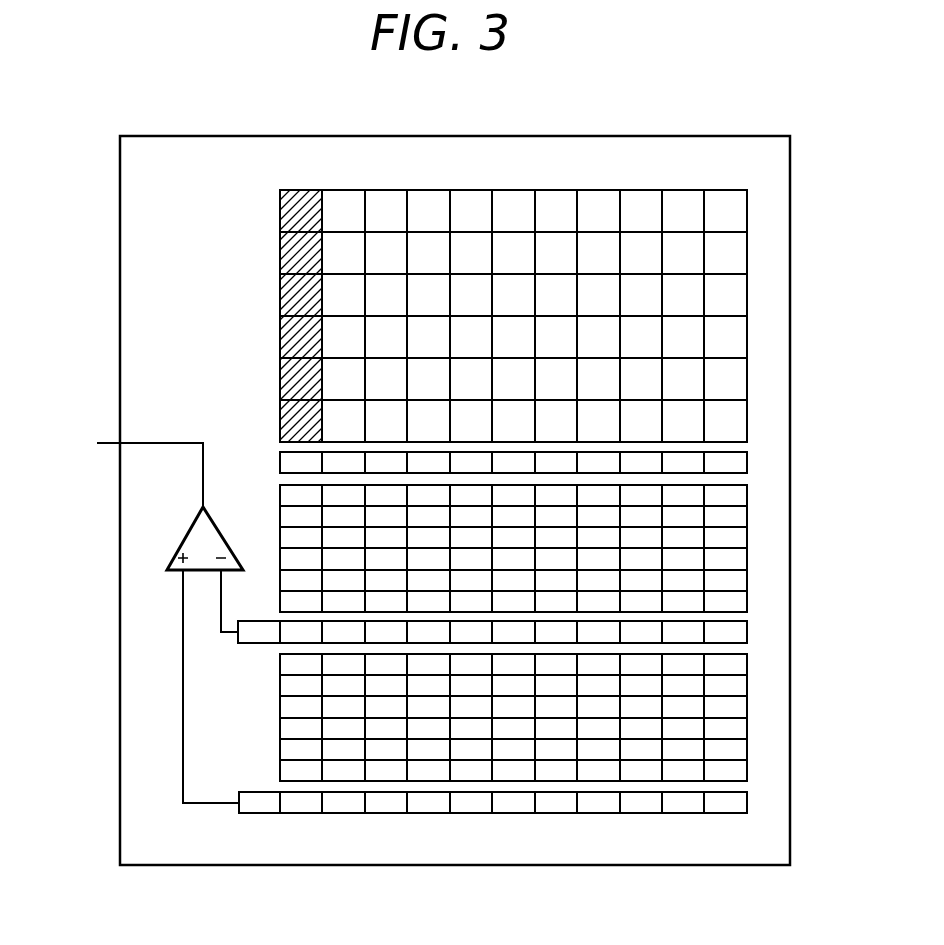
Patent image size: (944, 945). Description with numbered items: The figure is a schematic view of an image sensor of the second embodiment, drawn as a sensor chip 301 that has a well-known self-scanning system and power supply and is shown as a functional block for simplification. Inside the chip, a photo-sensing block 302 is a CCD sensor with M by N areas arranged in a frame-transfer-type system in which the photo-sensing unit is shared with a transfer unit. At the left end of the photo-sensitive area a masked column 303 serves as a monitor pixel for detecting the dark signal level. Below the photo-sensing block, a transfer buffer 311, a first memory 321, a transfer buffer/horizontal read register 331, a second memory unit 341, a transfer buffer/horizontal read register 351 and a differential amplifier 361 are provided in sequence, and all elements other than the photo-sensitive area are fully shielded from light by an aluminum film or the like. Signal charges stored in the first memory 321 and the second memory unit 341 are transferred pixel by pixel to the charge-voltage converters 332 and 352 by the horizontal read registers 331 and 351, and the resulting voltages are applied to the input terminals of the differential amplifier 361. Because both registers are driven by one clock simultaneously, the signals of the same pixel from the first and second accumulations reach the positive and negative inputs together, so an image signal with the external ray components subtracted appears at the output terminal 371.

The sensor chip 301 is at (484, 136).
The photo-sensing block 302 is at (735, 210).
The masked column 303 is at (307, 208).
The transfer buffer 311 is at (738, 463).
The first memory 321 is at (736, 517).
The transfer buffer/horizontal read register 331 is at (738, 632).
The second memory unit 341 is at (735, 703).
The transfer buffer/horizontal read register 351 is at (740, 800).
The differential amplifier 361 is at (188, 533).
The output terminal 371 is at (130, 467).
The charge-voltage converter 332 is at (254, 637).
The charge-voltage converter 352 is at (263, 803).